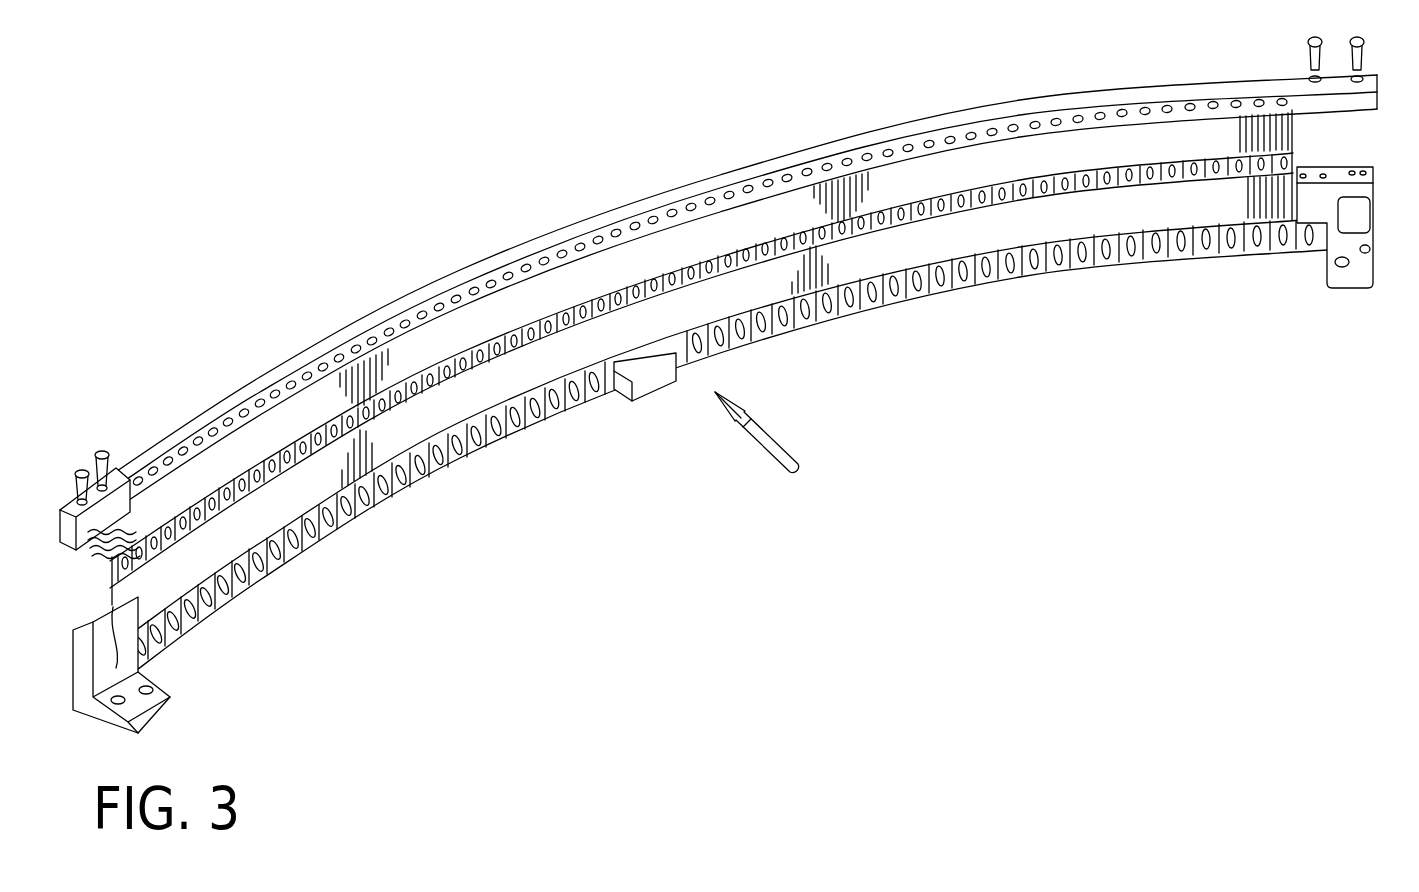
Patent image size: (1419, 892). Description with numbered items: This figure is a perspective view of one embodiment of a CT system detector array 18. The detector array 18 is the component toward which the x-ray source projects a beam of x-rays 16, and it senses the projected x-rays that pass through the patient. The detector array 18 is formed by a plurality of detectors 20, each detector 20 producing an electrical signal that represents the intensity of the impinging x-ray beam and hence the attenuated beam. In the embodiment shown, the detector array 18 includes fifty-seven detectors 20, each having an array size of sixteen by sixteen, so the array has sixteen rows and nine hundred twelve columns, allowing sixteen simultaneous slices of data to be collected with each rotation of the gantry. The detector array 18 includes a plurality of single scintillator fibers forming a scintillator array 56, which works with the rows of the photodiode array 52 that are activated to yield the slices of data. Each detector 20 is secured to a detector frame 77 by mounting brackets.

The beam of x-rays 16 is at (761, 452).
The detector array 18 is at (553, 220).
The detector 20 is at (341, 377).
The photodiode array 52 is at (1302, 162).
The scintillator array 56 is at (1143, 207).
The detector frame 77 is at (113, 582).